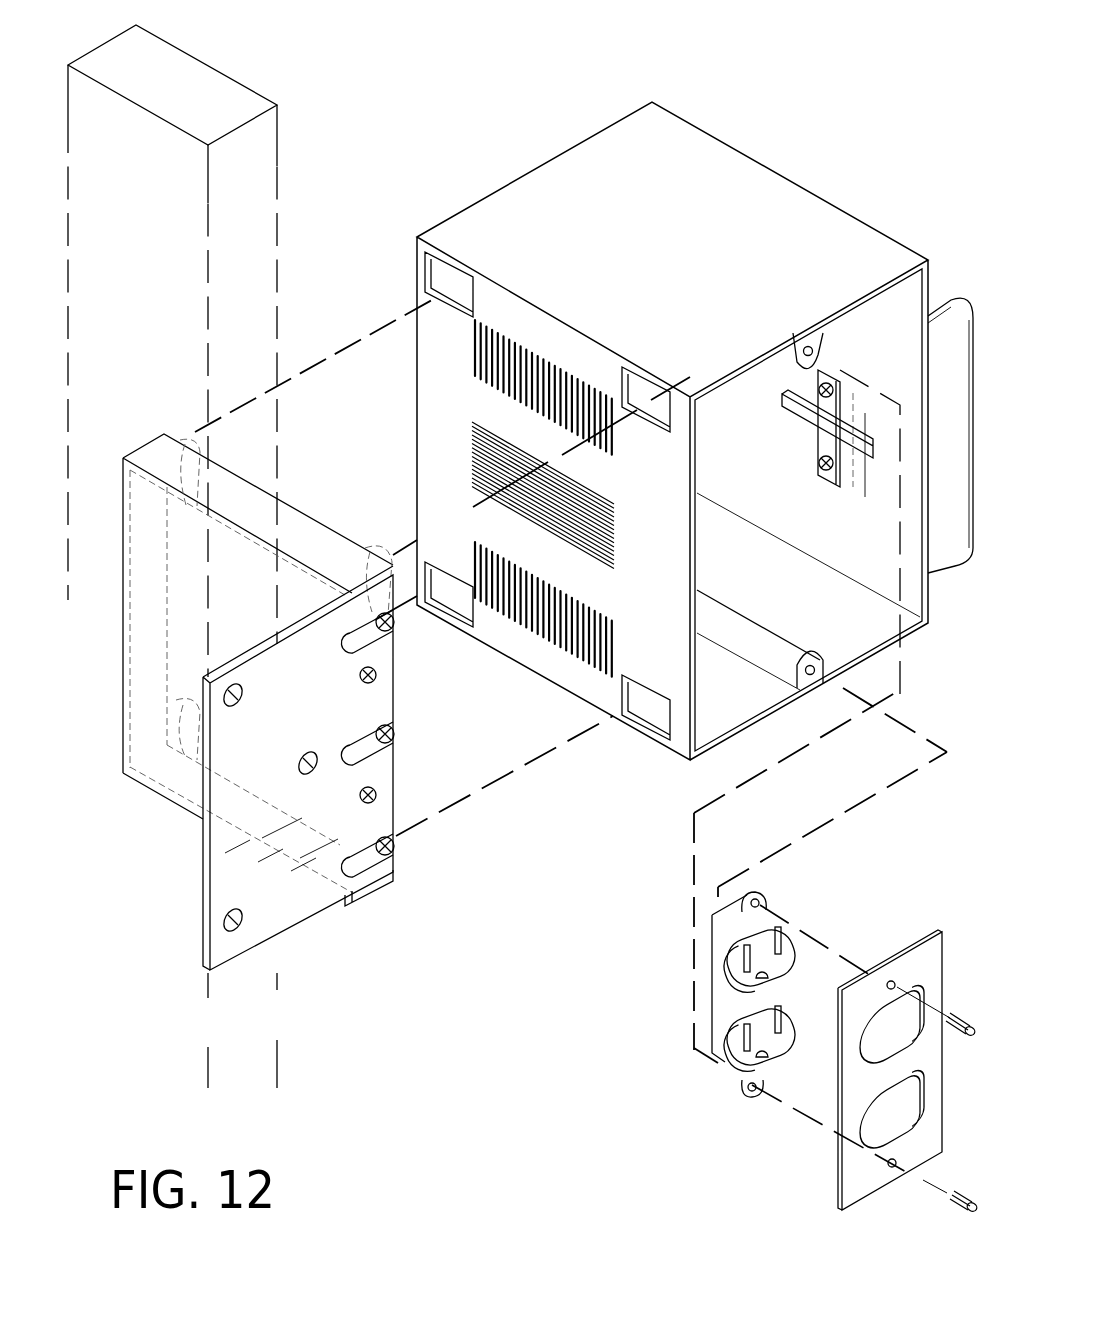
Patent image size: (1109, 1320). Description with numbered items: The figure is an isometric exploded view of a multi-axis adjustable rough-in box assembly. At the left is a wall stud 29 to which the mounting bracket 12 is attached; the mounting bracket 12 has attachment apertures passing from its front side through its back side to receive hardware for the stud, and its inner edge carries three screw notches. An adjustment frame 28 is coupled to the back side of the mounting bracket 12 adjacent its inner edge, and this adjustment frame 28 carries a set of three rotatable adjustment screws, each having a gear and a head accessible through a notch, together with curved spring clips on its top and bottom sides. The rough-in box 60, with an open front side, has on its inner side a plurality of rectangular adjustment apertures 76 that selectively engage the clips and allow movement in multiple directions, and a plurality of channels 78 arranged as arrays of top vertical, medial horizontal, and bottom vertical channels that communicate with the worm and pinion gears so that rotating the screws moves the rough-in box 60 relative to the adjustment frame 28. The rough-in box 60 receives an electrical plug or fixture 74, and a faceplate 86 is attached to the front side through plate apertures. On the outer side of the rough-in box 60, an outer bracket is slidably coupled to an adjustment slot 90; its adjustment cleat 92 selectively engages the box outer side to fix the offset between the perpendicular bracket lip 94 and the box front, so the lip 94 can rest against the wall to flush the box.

The mounting bracket 12 is at (303, 912).
The adjustment frame 28 is at (287, 537).
The wall stud 29 is at (245, 173).
The rough-in box 60 is at (832, 207).
The electrical plug or fixture 74 is at (722, 1005).
The adjustment apertures 76 is at (656, 713).
The channels 78 is at (548, 617).
The faceplate 86 is at (920, 967).
The adjustment slot 90 is at (866, 448).
The adjustment cleat 92 is at (828, 410).
The bracket lip 94 is at (955, 505).